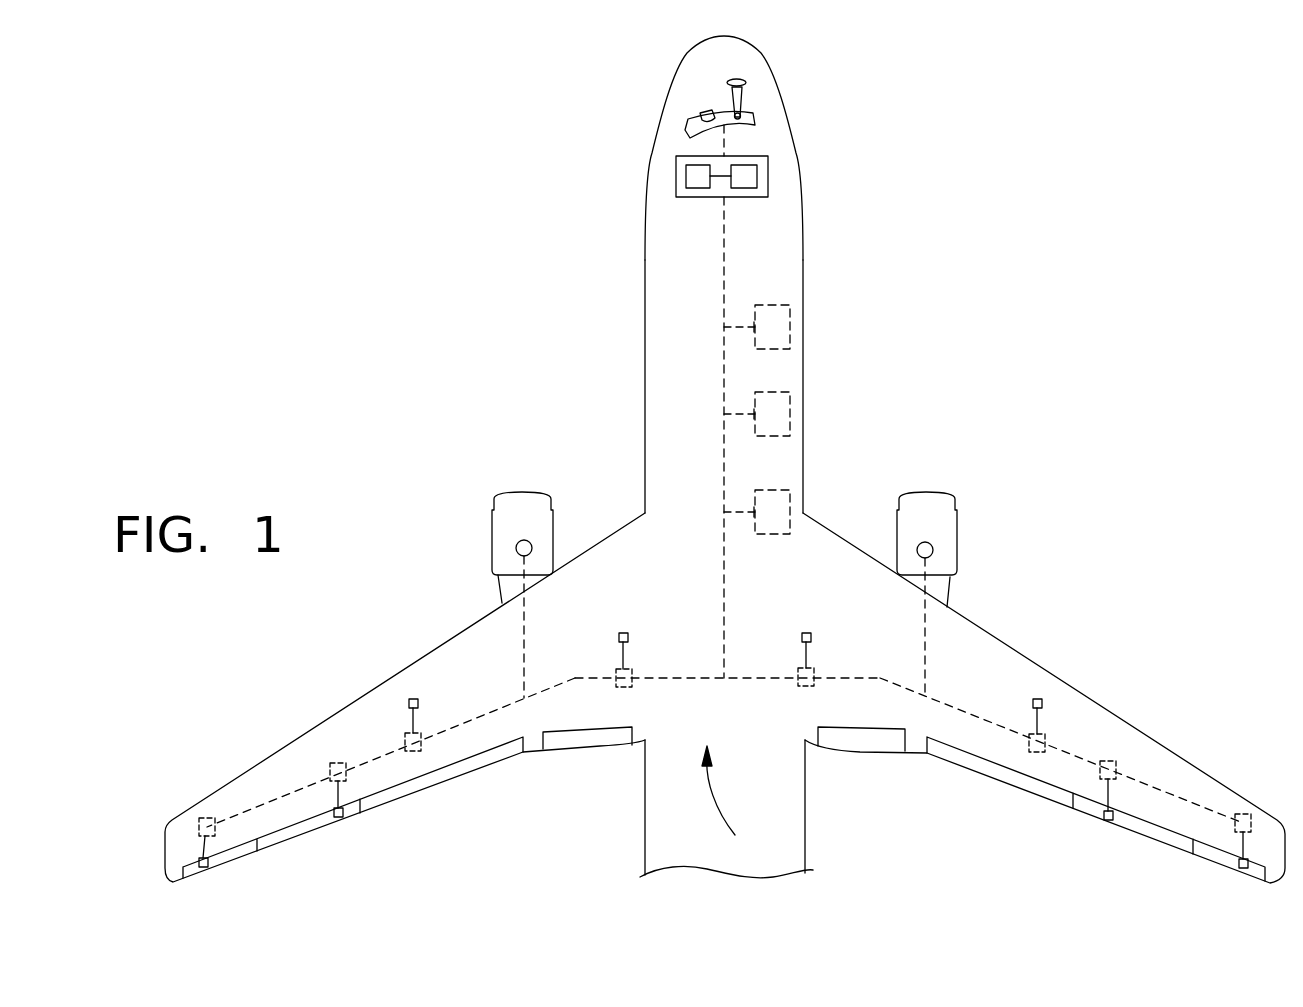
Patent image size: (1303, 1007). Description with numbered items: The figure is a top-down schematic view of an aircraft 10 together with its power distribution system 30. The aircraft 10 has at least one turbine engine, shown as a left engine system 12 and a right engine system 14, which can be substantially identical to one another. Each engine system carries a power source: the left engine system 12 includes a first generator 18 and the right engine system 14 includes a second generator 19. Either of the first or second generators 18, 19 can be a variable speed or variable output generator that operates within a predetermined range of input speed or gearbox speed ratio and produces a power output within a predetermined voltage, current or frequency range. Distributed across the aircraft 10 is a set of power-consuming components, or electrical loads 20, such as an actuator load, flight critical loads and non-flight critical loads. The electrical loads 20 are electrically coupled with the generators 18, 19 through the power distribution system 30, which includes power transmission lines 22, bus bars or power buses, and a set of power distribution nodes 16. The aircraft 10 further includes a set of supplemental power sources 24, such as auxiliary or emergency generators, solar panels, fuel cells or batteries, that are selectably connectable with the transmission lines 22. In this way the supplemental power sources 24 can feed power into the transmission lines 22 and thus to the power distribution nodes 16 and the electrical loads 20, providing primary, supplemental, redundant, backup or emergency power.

The aircraft 10 is at (517, 69).
The left engine system 12 is at (520, 500).
The right engine system 14 is at (937, 505).
The power distribution nodes 16 is at (624, 687).
The first generator 18 is at (533, 545).
The second generator 19 is at (918, 548).
The electrical loads 20 is at (678, 193).
The power transmission lines 22 is at (722, 385).
The supplemental power sources 24 is at (759, 340).
The power distribution system 30 is at (736, 806).